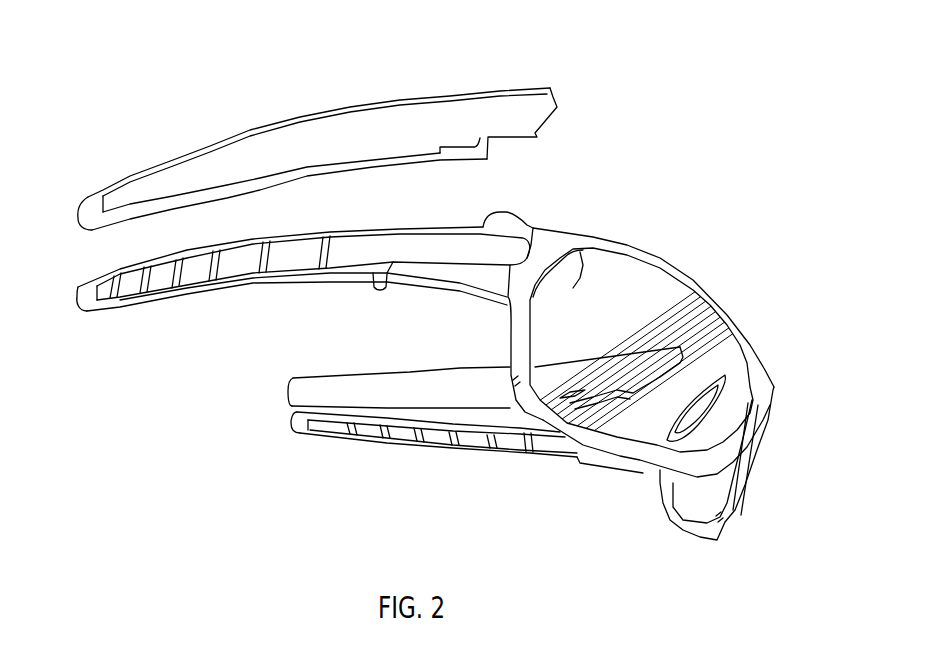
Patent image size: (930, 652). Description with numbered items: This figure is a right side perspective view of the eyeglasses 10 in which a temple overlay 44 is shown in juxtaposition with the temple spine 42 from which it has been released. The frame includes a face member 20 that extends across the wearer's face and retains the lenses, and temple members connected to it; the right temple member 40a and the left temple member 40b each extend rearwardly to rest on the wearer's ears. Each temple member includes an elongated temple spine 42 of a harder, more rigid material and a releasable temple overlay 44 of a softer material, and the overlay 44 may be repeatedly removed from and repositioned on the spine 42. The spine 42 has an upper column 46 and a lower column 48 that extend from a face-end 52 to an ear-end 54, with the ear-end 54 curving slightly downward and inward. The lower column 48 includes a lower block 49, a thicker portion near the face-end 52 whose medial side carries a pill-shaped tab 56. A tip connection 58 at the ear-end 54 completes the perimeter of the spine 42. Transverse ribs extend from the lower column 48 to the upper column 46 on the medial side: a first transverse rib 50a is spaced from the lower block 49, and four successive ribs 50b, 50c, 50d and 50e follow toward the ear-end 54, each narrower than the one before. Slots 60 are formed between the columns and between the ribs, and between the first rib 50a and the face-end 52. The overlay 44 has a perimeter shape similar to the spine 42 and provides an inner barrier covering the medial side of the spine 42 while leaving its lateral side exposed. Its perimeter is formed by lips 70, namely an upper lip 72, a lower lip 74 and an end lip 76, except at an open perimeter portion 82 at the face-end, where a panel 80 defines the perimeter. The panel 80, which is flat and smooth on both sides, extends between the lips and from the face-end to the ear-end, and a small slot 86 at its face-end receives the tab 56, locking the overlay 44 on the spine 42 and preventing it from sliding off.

The eyeglasses 10 is at (581, 366).
The face member 20 is at (777, 383).
The right temple member 40a is at (277, 317).
The left temple member 40b is at (440, 485).
The temple spine 42 is at (196, 283).
The temple overlay 44 is at (328, 210).
The upper column 46 is at (533, 228).
The lower column 48 is at (312, 282).
The lower block 49 is at (377, 285).
The first transverse rib 50a is at (268, 280).
The transverse rib 50b is at (218, 277).
The transverse rib 50c is at (172, 275).
The transverse rib 50d is at (137, 277).
The transverse rib 50e is at (103, 288).
The face-end 52 is at (467, 290).
The ear-end 54 is at (72, 292).
The tab 56 is at (600, 463).
The tip connection 58 is at (297, 427).
The slots 60 is at (331, 428).
The lips 70 is at (328, 121).
The upper lip 72 is at (173, 160).
The lower lip 74 is at (390, 158).
The end lip 76 is at (94, 208).
The panel 80 is at (305, 135).
The open perimeter portion 82 is at (540, 132).
The slot 86 is at (463, 145).